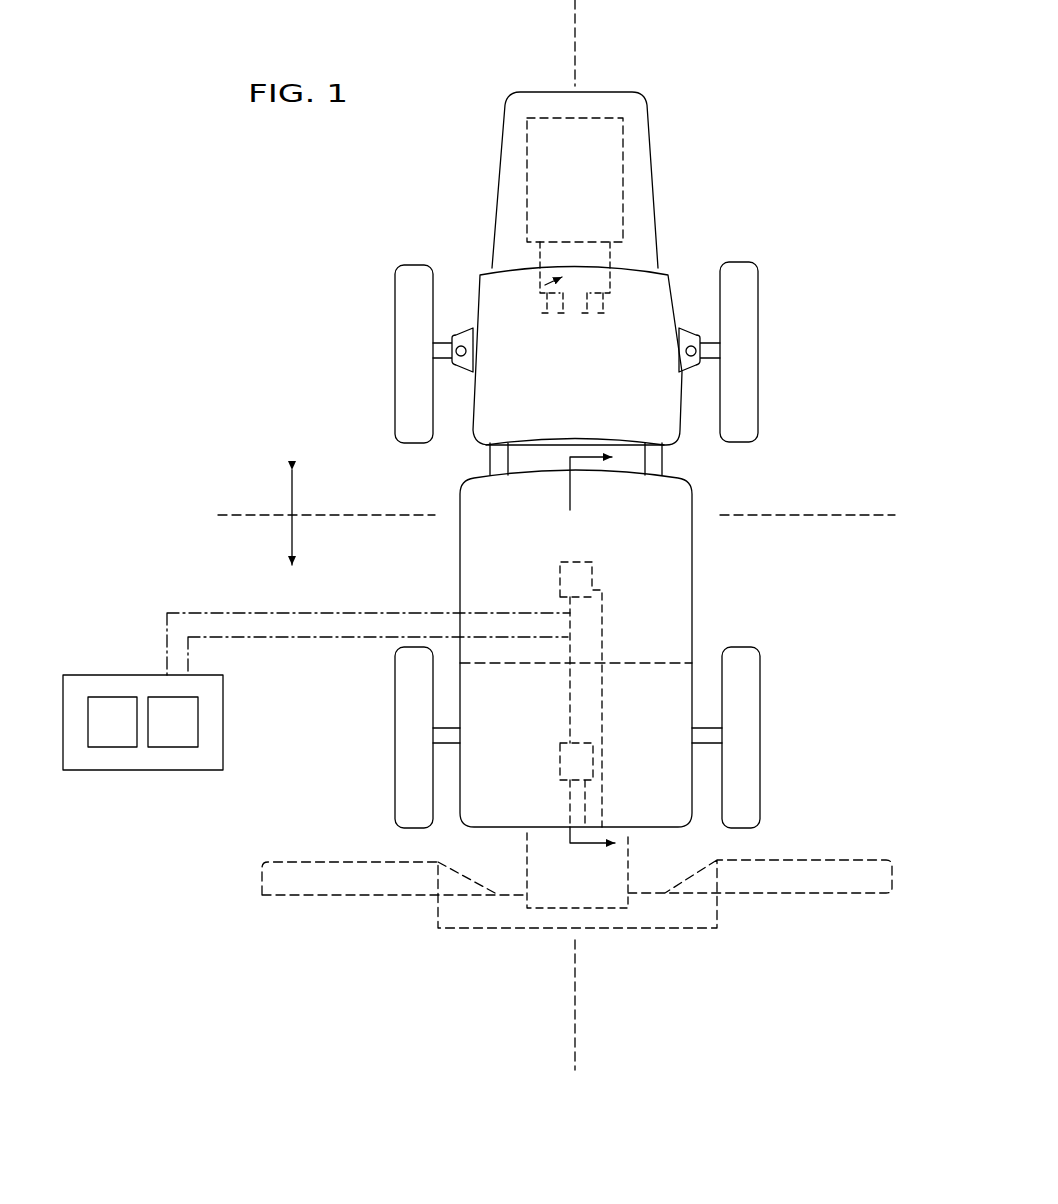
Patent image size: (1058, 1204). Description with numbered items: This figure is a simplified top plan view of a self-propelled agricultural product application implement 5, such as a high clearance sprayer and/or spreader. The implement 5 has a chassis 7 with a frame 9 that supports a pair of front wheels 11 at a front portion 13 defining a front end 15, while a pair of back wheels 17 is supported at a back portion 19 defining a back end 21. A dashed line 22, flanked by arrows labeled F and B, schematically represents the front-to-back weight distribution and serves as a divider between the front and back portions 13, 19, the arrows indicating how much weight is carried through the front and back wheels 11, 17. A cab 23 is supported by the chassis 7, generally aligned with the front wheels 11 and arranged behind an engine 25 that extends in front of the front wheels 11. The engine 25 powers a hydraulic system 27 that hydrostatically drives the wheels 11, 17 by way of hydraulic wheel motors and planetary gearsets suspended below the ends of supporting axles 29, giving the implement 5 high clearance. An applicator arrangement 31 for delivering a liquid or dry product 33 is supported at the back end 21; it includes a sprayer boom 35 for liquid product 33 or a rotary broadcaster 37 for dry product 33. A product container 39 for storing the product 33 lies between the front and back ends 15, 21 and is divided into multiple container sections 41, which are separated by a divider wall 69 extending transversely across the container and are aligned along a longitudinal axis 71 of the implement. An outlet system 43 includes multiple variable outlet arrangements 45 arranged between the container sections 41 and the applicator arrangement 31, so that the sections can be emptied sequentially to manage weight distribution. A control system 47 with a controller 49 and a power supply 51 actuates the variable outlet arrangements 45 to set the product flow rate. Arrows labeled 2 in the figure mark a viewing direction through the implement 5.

The section line 2 is at (608, 652).
The implement 5 is at (760, 46).
The chassis 7 is at (485, 458).
The frame 9 is at (662, 458).
The front wheels 11 is at (410, 298).
The front portion 13 is at (715, 143).
The front end 15 is at (670, 95).
The back wheels 17 is at (408, 797).
The back portion 19 is at (820, 636).
The back end 21 is at (818, 820).
The dashed line 22 is at (237, 515).
The cab 23 is at (643, 400).
The engine 25 is at (550, 147).
The hydraulic system 27 is at (540, 290).
The axles 29 is at (470, 365).
The applicator arrangement 31 is at (538, 968).
The product 33 is at (695, 550).
The sprayer boom 35 is at (717, 893).
The rotary broadcaster 37 is at (527, 860).
The product container 39 is at (698, 598).
The container sections 41 is at (470, 568).
The outlet system 43 is at (568, 557).
The variable outlet arrangements 45 is at (585, 562).
The control system 47 is at (316, 686).
The controller 49 is at (112, 722).
The power supply 51 is at (173, 722).
The divider wall 69 is at (650, 664).
The longitudinal axis 71 is at (578, 20).